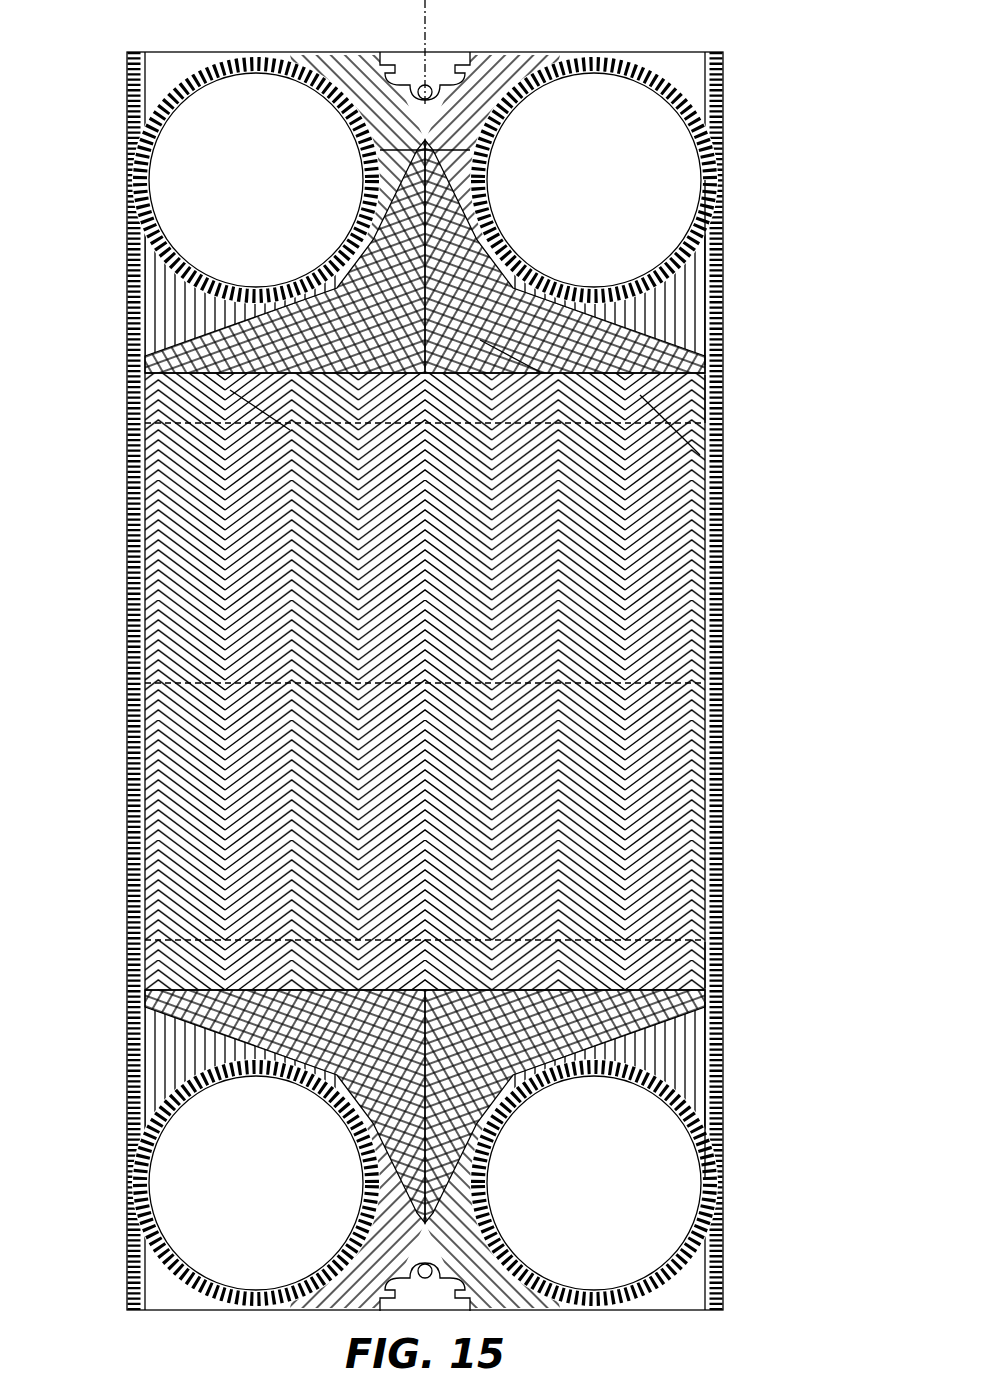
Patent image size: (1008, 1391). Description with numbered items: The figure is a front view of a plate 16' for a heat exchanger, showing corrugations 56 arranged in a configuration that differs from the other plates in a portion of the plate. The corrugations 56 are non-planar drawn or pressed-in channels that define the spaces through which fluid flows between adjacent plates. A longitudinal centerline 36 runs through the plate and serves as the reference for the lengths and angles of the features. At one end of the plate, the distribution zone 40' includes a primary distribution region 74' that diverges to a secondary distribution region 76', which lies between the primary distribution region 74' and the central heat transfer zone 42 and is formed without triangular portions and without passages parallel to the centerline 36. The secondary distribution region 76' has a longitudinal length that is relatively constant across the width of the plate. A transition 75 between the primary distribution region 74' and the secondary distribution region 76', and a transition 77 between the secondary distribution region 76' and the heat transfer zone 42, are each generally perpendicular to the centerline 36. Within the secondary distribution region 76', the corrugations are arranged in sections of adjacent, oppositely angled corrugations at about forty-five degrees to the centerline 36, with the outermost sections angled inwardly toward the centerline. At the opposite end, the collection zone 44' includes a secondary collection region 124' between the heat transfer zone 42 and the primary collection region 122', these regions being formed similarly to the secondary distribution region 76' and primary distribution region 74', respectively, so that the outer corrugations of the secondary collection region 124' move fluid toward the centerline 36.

The plate 16' is at (508, 677).
The centerline 36 is at (426, 13).
The distribution zone 40' is at (379, 238).
The heat transfer zone 42 is at (107, 430).
The collection zone 44' is at (379, 1125).
The corrugations 56 is at (415, 188).
The primary distribution region 74' is at (755, 271).
The transition 75 is at (510, 365).
The secondary distribution region 76' is at (755, 400).
The transition 77 is at (262, 420).
The primary collection region 122' is at (762, 1092).
The secondary collection region 124' is at (762, 965).